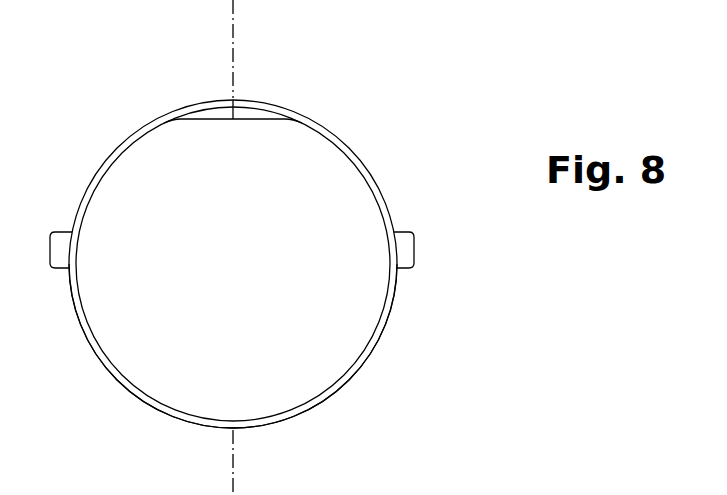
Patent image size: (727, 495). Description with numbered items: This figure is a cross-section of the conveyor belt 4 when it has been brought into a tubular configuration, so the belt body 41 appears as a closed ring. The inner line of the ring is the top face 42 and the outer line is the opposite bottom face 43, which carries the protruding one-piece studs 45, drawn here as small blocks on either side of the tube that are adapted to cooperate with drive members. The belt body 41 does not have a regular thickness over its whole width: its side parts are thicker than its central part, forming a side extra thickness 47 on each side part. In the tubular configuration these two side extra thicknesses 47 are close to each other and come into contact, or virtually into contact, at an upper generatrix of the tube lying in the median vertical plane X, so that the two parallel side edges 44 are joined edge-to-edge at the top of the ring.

The conveyor belt 4 is at (93, 142).
The belt body 41 is at (97, 355).
The top face 42 is at (159, 376).
The bottom face 43 is at (362, 398).
The side edges 44 is at (202, 71).
The one-piece studs 45 is at (51, 247).
The side extra thickness 47 is at (194, 145).
The longitudinal median plane X is at (256, 494).